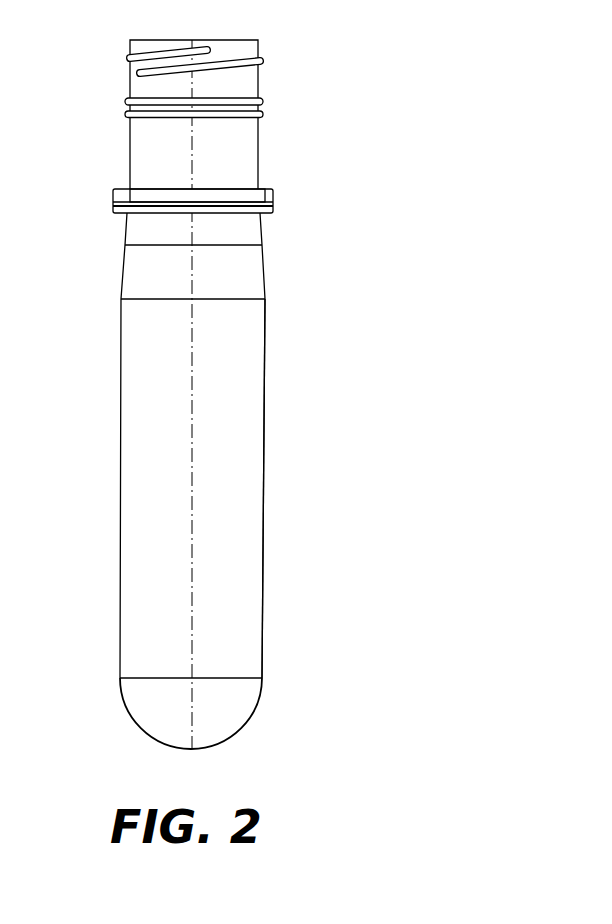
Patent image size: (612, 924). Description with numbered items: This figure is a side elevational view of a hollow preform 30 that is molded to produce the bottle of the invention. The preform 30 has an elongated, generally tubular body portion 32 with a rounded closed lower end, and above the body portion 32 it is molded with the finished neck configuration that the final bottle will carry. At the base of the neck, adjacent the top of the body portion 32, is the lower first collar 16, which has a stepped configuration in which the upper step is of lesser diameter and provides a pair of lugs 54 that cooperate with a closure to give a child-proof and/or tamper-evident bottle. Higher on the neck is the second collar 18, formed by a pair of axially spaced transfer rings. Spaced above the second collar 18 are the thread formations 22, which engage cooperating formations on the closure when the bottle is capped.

The first collar 16 is at (112, 203).
The second collar 18 is at (266, 113).
The thread formations 22 is at (127, 58).
The preform 30 is at (116, 520).
The body portion 32 is at (268, 408).
The lugs 54 is at (273, 190).